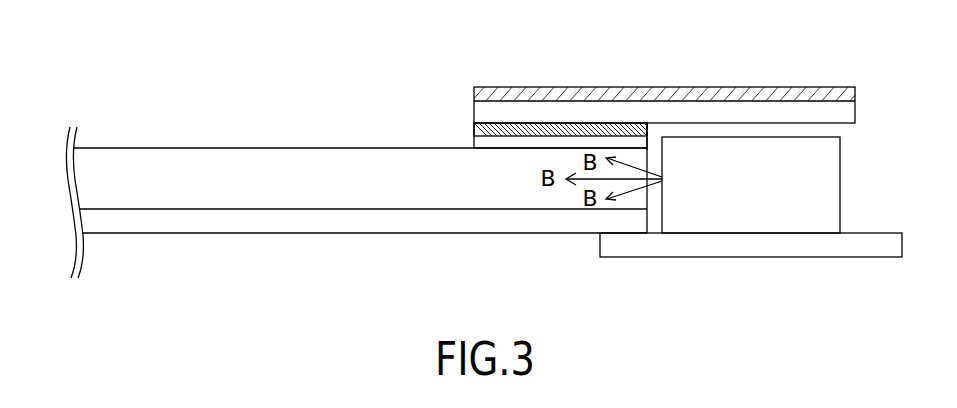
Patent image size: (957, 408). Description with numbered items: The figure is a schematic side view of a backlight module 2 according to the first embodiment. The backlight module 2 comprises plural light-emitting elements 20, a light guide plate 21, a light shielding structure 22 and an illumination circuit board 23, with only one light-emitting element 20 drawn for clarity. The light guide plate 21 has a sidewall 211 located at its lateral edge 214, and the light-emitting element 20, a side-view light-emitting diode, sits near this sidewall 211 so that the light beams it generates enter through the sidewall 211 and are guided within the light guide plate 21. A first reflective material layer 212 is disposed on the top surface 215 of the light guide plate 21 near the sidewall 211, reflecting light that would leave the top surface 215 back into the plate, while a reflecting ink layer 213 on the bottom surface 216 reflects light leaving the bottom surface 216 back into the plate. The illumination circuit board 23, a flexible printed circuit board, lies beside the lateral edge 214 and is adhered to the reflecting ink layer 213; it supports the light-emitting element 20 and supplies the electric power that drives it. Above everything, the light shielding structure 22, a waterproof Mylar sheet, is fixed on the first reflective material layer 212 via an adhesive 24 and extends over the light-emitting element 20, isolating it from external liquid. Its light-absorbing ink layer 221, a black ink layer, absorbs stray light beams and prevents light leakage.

The backlight module 2 is at (177, 55).
The light-emitting element 20 is at (823, 200).
The light guide plate 21 is at (158, 163).
The sidewall 211 is at (570, 148).
The first reflective material layer 212 is at (487, 130).
The reflecting ink layer 213 is at (338, 225).
The lateral edge 214 is at (570, 200).
The top surface 215 is at (305, 146).
The bottom surface 216 is at (213, 210).
The light shielding structure 22 is at (833, 106).
The light-absorbing ink layer 221 is at (748, 93).
The illumination circuit board 23 is at (772, 243).
The adhesive 24 is at (537, 123).